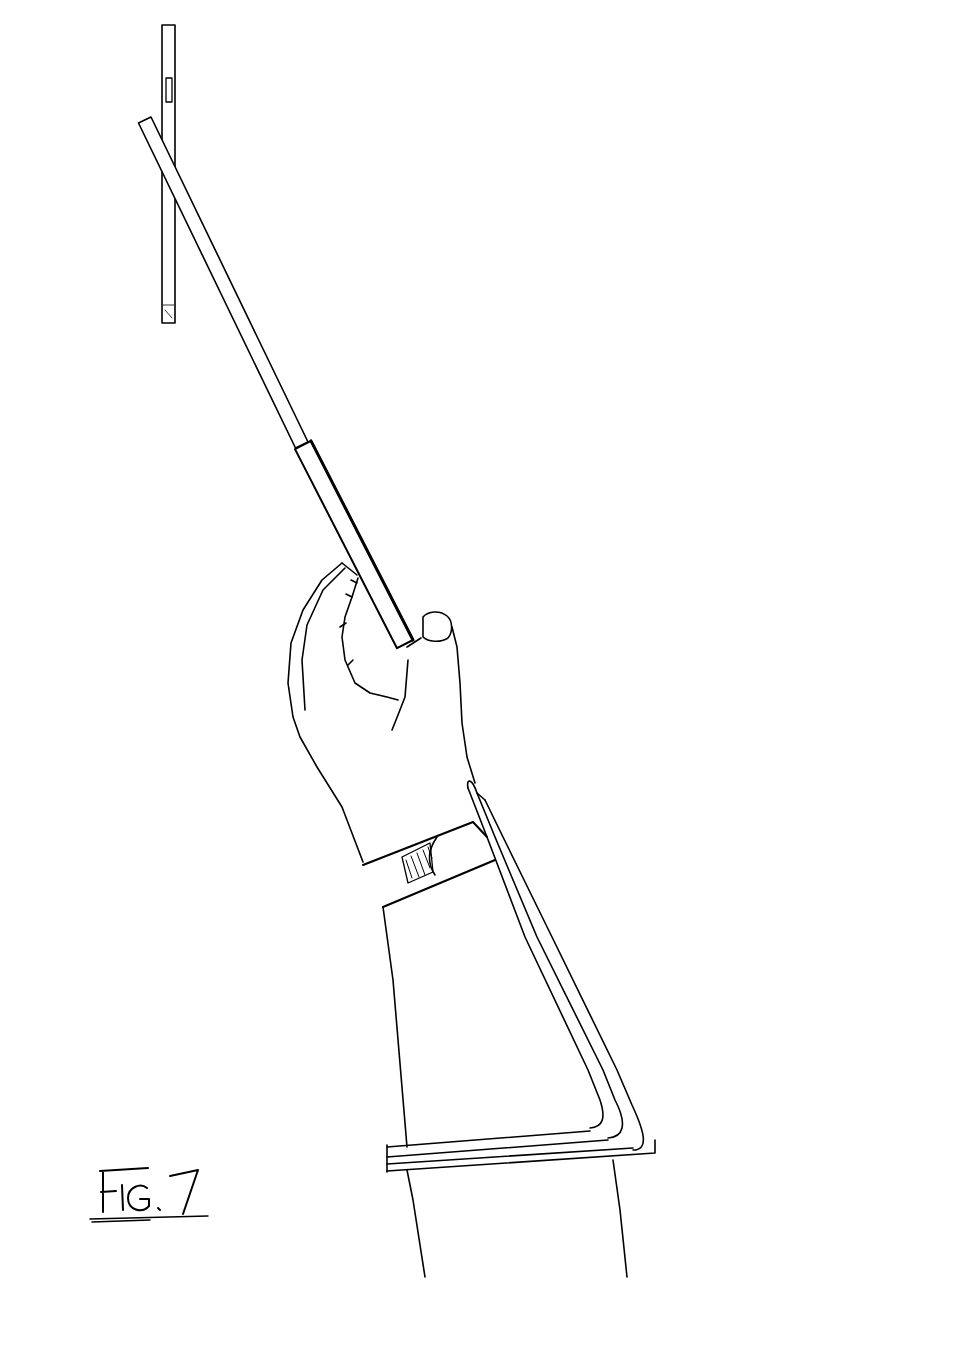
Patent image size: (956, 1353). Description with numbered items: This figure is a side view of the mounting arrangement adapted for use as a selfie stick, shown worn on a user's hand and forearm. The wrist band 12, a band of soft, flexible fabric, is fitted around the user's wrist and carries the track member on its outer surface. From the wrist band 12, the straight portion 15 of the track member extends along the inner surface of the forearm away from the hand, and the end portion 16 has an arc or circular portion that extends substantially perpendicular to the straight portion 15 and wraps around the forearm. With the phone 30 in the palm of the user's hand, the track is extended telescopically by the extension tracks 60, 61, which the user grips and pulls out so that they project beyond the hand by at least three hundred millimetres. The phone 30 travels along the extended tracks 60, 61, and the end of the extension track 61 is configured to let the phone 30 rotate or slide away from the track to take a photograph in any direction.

The phone 30 is at (178, 131).
The extension track 61 is at (289, 401).
The extension track 60 is at (346, 503).
The wrist band 12 is at (378, 903).
The straight portion 15 is at (528, 884).
The end portion 16 is at (462, 1143).